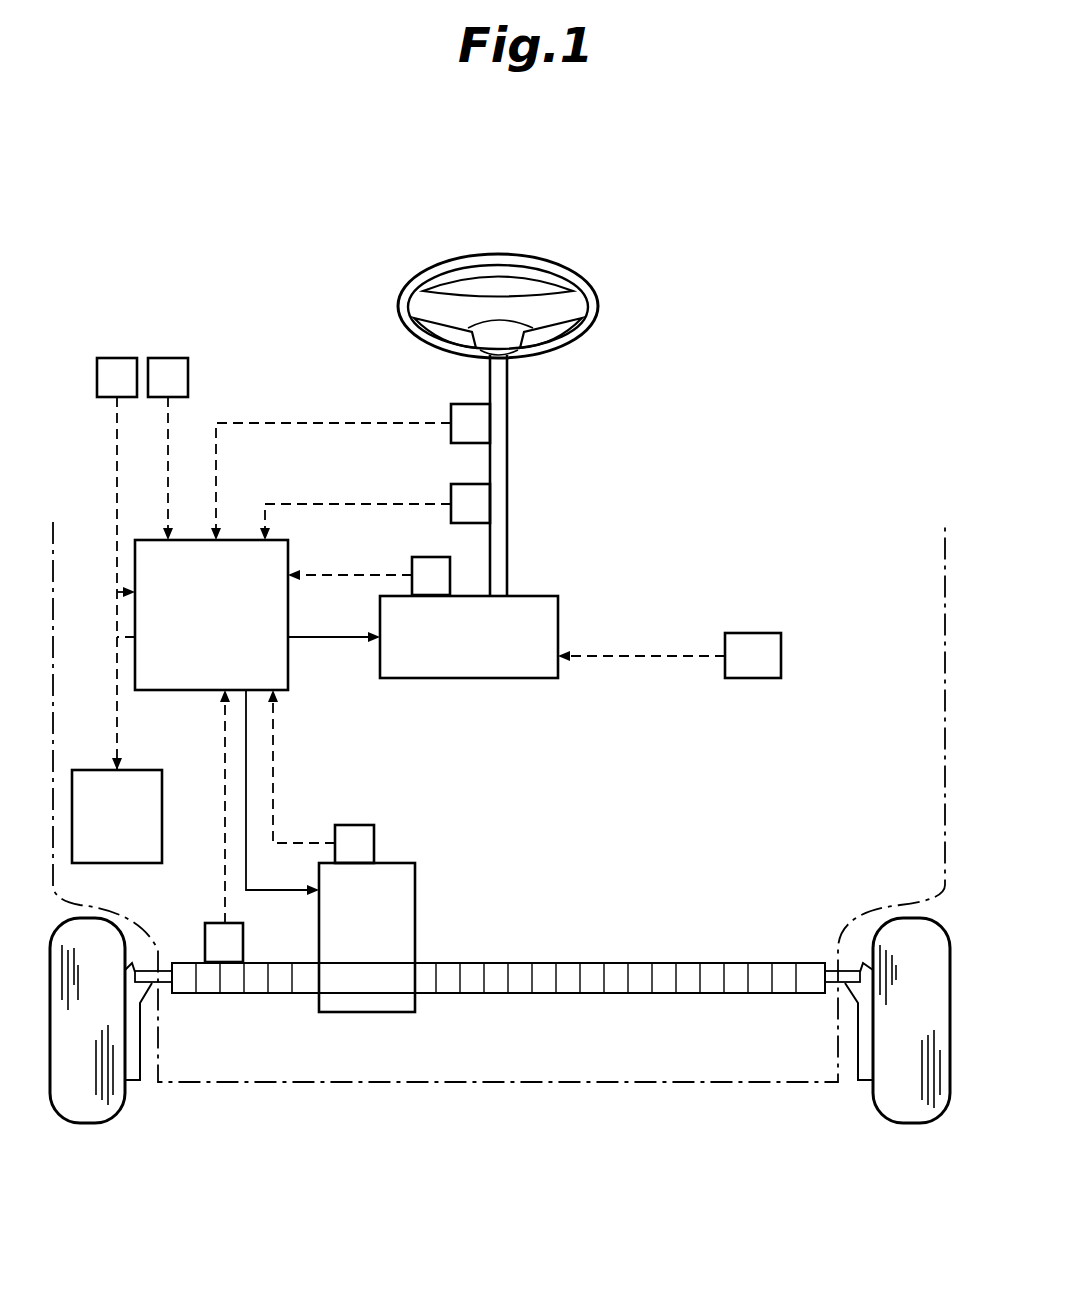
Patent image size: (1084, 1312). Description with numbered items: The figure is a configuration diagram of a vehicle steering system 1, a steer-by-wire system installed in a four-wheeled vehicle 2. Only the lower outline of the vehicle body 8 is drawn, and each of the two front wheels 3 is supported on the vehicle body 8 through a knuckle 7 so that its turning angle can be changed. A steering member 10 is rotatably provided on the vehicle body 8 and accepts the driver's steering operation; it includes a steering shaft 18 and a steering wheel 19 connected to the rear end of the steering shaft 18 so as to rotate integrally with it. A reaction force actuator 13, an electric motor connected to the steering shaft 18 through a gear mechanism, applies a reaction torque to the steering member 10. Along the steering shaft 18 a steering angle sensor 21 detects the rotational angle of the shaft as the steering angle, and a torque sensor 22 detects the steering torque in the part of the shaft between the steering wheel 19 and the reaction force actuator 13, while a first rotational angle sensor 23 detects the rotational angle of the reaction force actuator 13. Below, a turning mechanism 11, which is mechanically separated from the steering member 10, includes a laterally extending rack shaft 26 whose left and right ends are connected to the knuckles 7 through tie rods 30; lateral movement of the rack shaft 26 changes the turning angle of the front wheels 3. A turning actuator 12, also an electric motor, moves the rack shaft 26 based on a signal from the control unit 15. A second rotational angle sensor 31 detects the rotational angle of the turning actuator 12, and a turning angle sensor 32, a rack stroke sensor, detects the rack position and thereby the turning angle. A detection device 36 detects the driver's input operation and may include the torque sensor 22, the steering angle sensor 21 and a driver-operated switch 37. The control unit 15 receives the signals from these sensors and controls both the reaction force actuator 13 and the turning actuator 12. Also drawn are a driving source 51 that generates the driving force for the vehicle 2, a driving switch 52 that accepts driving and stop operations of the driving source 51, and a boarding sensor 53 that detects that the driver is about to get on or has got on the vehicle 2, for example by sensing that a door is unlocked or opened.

The vehicle steering system 1 is at (372, 256).
The vehicle 2 is at (191, 172).
The front wheel 3 is at (82, 1120).
The knuckle 7 is at (132, 1082).
The vehicle body 8 is at (722, 1085).
The steering member 10 is at (605, 242).
The turning mechanism 11 is at (285, 1017).
The turning actuator 12 is at (347, 1012).
The reaction force actuator 13 is at (560, 620).
The control unit 15 is at (168, 690).
The steering shaft 18 is at (498, 447).
The steering wheel 19 is at (580, 346).
The steering angle sensor 21 is at (458, 404).
The torque sensor 22 is at (462, 484).
The first rotational angle sensor 23 is at (420, 557).
The rack shaft 26 is at (642, 993).
The tie rod 30 is at (165, 995).
The second rotational angle sensor 31 is at (375, 843).
The turning angle sensor 32 is at (205, 940).
The detection device 36 is at (319, 425).
The switch 37 is at (172, 358).
The driving source 51 is at (162, 838).
The driving switch 52 is at (117, 358).
The boarding sensor 53 is at (765, 633).